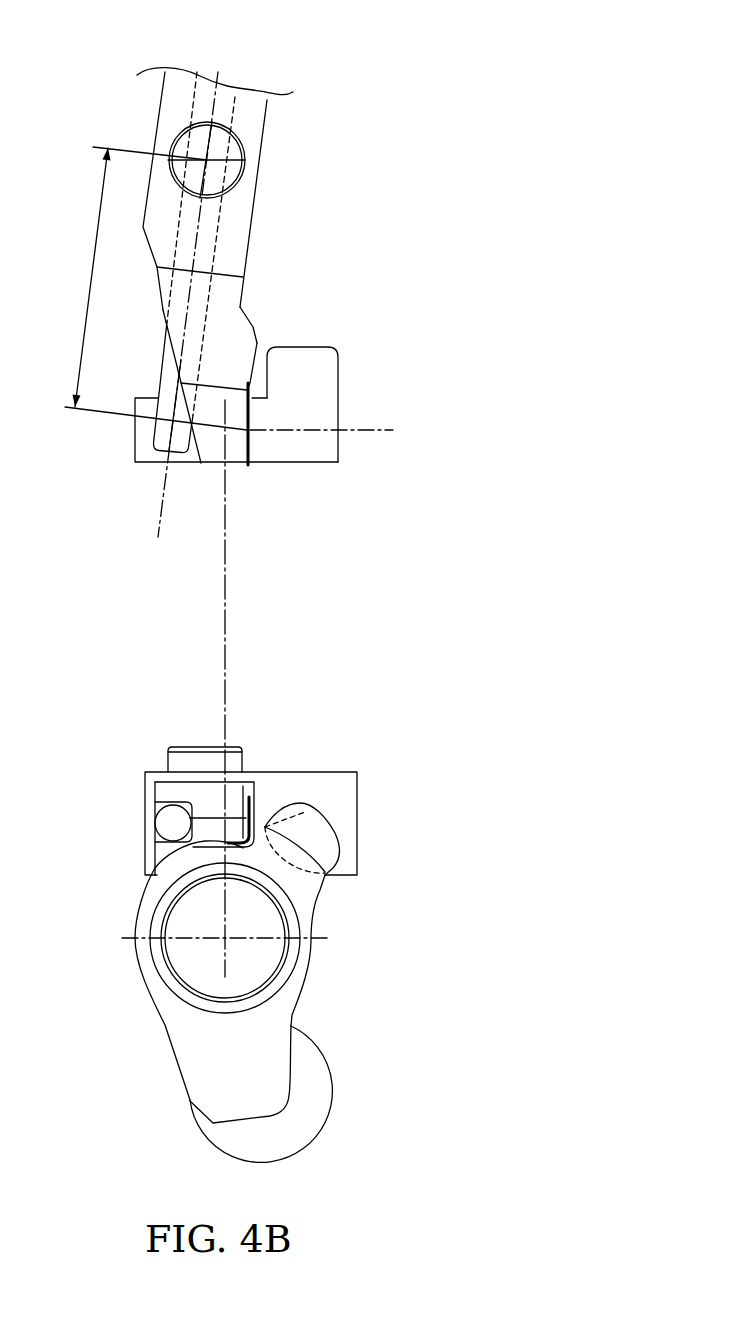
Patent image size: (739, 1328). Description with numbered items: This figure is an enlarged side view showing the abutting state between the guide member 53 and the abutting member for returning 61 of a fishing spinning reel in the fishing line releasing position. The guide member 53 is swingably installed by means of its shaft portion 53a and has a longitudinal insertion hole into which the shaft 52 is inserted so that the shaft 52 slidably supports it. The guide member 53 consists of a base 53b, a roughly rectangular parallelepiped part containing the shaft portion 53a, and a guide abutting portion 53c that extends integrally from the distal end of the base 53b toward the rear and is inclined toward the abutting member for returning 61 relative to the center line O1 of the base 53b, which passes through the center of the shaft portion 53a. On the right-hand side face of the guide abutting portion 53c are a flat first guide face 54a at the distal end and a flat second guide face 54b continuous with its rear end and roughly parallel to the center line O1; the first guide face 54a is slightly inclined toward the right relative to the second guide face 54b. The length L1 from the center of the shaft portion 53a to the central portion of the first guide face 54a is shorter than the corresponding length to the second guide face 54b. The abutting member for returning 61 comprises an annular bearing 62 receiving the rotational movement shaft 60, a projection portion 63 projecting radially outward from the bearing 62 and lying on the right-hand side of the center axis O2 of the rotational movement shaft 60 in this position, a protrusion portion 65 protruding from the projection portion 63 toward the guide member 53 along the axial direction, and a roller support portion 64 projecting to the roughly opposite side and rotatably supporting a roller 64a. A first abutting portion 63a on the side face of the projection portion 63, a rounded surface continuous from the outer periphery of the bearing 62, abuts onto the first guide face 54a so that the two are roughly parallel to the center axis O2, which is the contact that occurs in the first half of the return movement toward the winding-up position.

The shaft 52 is at (207, 222).
The guide member 53 is at (229, 447).
The shaft portion 53a is at (232, 162).
The base 53b is at (168, 112).
The guide abutting portion 53c is at (228, 323).
The first guide face 54a is at (250, 445).
The second guide face 54b is at (257, 346).
The rotational movement shaft 60 is at (203, 928).
The abutting member for returning 61 is at (261, 777).
The bearing 62 is at (237, 422).
The projection portion 63 is at (238, 657).
The first abutting portion 63a is at (247, 438).
The roller support portion 64 is at (220, 1090).
The roller 64a is at (317, 1117).
The protrusion portion 65 is at (323, 380).
The length L1 is at (147, 288).
The center line O1 is at (160, 520).
The center axis O2 is at (225, 617).